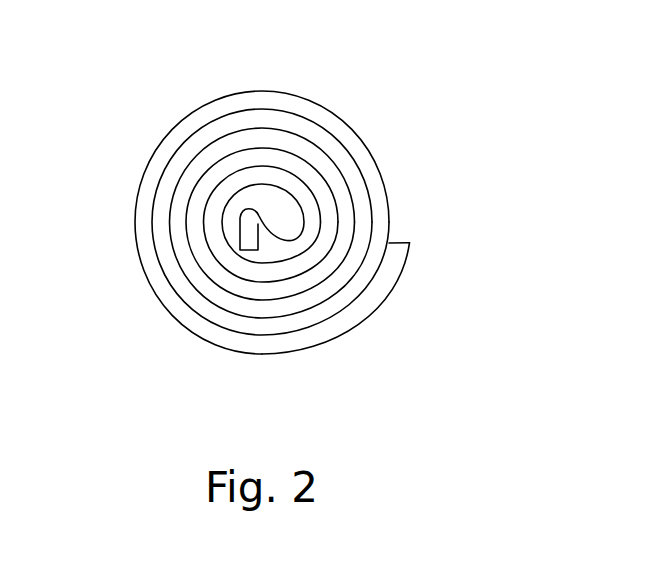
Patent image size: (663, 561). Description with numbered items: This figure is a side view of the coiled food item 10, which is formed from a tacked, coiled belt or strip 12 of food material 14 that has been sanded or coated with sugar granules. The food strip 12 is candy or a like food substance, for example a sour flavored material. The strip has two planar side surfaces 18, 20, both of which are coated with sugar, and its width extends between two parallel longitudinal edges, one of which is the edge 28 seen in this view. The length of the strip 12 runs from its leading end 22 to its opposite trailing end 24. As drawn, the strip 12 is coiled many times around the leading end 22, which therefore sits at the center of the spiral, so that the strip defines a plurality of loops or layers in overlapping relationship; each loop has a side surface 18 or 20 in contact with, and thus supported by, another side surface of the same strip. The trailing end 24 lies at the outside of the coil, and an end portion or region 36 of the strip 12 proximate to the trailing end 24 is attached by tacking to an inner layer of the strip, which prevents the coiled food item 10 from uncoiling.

The food item 10 is at (440, 178).
The food strip 12 is at (203, 318).
The food material 14 is at (335, 125).
The planar side surface 18 is at (150, 280).
The planar side surface 20 is at (250, 242).
The leading end 22 is at (274, 252).
The trailing end 24 is at (402, 243).
The parallel edge 28 is at (362, 157).
The end portion 36 is at (376, 310).